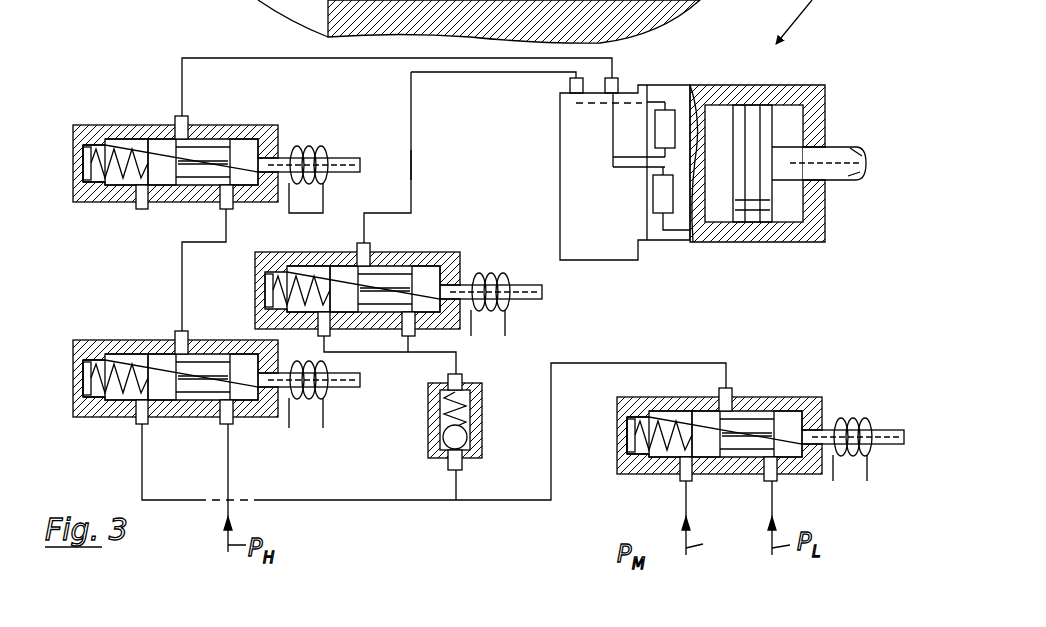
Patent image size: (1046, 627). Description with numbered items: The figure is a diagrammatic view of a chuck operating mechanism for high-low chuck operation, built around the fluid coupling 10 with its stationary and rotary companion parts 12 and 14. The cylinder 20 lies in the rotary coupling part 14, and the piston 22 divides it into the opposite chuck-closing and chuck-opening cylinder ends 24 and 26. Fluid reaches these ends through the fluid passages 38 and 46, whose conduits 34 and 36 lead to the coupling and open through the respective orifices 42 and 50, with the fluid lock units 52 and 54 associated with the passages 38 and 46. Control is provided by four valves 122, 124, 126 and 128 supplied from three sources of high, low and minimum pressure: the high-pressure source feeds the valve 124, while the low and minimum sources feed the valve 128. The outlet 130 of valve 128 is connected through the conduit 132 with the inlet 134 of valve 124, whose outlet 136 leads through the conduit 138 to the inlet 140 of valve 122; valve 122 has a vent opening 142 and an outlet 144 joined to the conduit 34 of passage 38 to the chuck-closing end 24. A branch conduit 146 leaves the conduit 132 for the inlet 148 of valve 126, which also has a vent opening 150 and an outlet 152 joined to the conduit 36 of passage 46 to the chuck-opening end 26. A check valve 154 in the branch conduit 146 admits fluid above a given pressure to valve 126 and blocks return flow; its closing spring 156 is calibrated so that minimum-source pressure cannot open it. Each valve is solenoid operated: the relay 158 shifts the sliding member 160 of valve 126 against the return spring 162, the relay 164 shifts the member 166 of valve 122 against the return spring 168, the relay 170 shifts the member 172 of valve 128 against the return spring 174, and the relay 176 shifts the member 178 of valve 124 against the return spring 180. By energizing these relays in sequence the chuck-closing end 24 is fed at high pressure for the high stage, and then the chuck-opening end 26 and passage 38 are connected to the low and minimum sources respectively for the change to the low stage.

The fluid coupling 10 is at (778, 143).
The stationary coupling part 12 is at (601, 158).
The rotary coupling part 14 is at (700, 85).
The cylinder 20 is at (780, 211).
The piston 22 is at (750, 120).
The chuck-closing cylinder end 24 is at (790, 136).
The chuck-opening cylinder end 26 is at (722, 201).
The conduit 34 is at (381, 73).
The conduit 36 is at (412, 131).
The fluid passage 38 is at (290, 61).
The orifice 42 is at (640, 167).
The fluid passage 46 is at (413, 167).
The orifice 50 is at (642, 106).
The fluid lock unit 52 is at (662, 196).
The fluid lock unit 54 is at (663, 124).
The valve 122 is at (216, 217).
The valve 124 is at (210, 372).
The valve 126 is at (398, 274).
The valve 128 is at (760, 426).
The outlet 130 is at (728, 393).
The conduit 132 is at (328, 500).
The inlet 134 is at (135, 405).
The outlet 136 is at (188, 350).
The conduit 138 is at (184, 259).
The inlet 140 is at (228, 196).
The vent opening 142 is at (130, 190).
The outlet 144 is at (185, 133).
The branch conduit 146 is at (395, 353).
The inlet 148 is at (328, 318).
The vent opening 150 is at (410, 318).
The outlet 152 is at (360, 256).
The check valve 154 is at (443, 422).
The closing spring 156 is at (472, 406).
The relay 158 is at (488, 288).
The sliding member 160 is at (380, 292).
The return spring 162 is at (296, 266).
The relay 164 is at (310, 147).
The member 166 is at (198, 168).
The return spring 168 is at (118, 142).
The relay 170 is at (850, 430).
The member 172 is at (750, 433).
The return spring 174 is at (656, 468).
The relay 176 is at (305, 402).
The member 178 is at (205, 380).
The return spring 180 is at (110, 360).